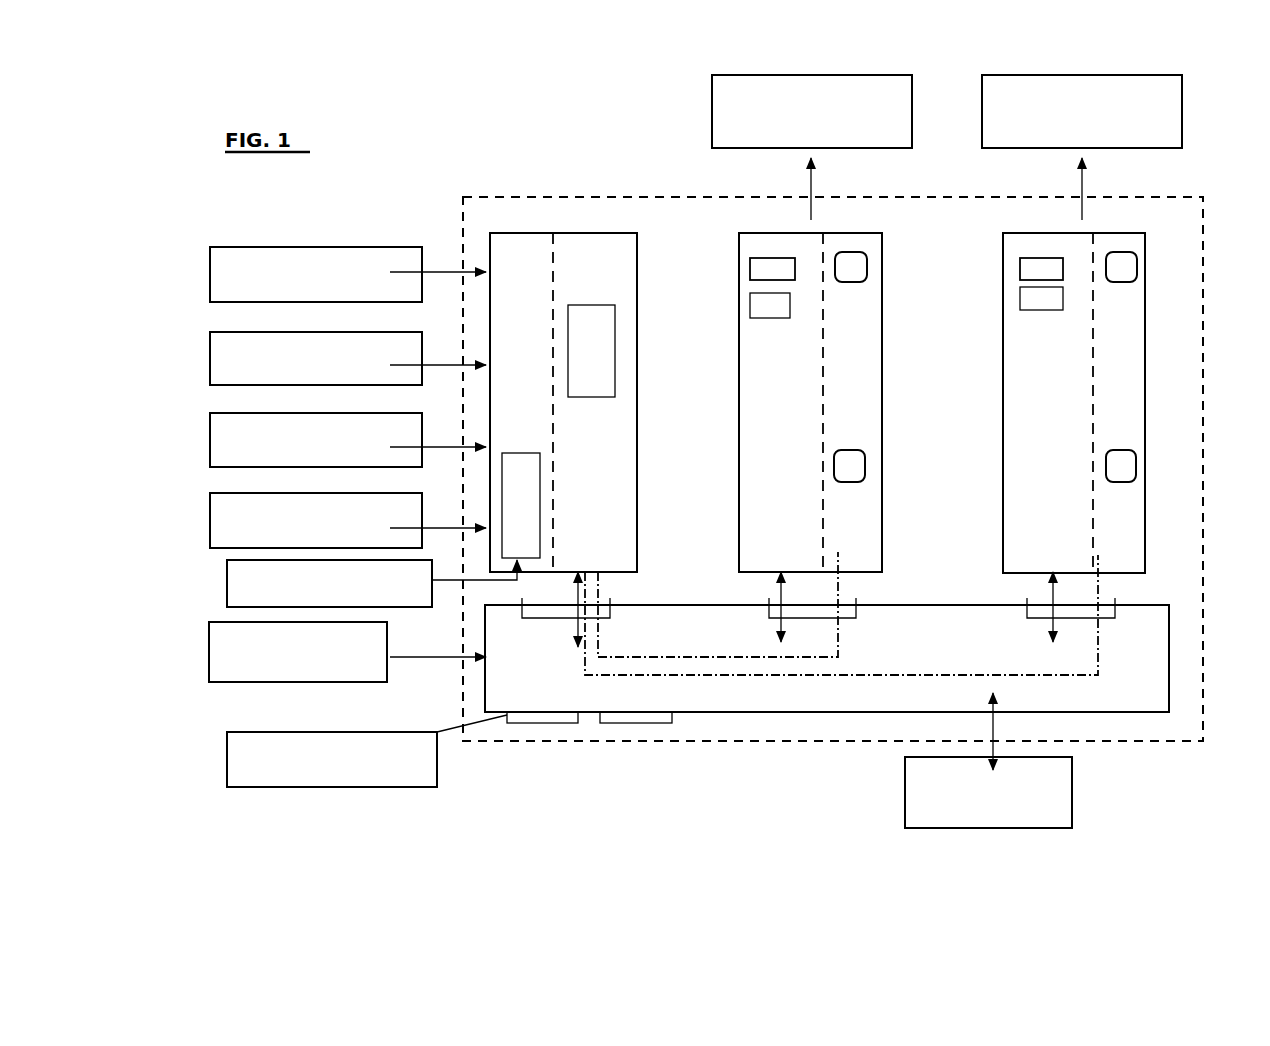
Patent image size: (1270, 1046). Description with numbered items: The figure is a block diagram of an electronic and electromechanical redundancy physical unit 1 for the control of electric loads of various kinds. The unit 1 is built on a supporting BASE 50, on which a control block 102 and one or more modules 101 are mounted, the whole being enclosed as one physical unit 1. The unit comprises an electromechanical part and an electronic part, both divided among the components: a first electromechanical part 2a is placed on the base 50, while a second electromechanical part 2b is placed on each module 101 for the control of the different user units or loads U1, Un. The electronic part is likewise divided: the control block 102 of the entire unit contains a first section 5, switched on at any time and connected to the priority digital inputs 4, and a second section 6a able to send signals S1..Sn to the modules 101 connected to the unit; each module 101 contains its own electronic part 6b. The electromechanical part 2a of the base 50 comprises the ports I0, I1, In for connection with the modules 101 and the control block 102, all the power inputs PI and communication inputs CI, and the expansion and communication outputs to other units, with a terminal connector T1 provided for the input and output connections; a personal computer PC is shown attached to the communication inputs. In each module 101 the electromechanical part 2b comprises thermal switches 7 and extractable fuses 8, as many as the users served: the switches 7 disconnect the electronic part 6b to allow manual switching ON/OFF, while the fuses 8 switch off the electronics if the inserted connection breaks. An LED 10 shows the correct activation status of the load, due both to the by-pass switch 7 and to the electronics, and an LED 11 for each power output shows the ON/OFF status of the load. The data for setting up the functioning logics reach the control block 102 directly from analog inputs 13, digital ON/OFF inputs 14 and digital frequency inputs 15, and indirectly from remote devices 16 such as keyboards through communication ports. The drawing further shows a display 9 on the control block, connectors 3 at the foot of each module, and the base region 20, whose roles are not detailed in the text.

The electronic and electromechanical redundancy physical unit 1 is at (497, 185).
The control block 102 is at (556, 231).
The second section 6a is at (584, 402).
The display 9 is at (600, 363).
The first section 5 is at (521, 505).
The analog inputs 13 is at (232, 283).
The digital ON/OFF inputs 14 is at (237, 367).
The digital frequency inputs 15 is at (225, 445).
The remote devices 16 is at (235, 530).
The priority digital inputs 4 is at (227, 562).
The base 20 is at (867, 653).
The supporting base 50 is at (1087, 718).
The modules 101 is at (1026, 340).
The first electromechanical part 2a is at (917, 613).
The second electromechanical part 2b is at (928, 403).
The electronic part of module 6b is at (992, 403).
The thermal switches 7 is at (765, 268).
The extractable fuses 8 is at (758, 302).
The LED 11 is at (848, 259).
The LED 10 is at (848, 460).
The module connector 3 is at (857, 578).
The user unit or load U1 is at (720, 148).
The user unit or load Un is at (1140, 148).
The terminal connector T1 is at (993, 728).
The power inputs PI is at (237, 673).
The personal computer PC is at (437, 762).
The communication inputs CI is at (522, 723).
The interface I0 is at (535, 620).
The port I1 is at (856, 618).
The port In is at (1027, 610).
The signals S1..Sn is at (662, 675).
The supporting base BASE is at (1169, 688).